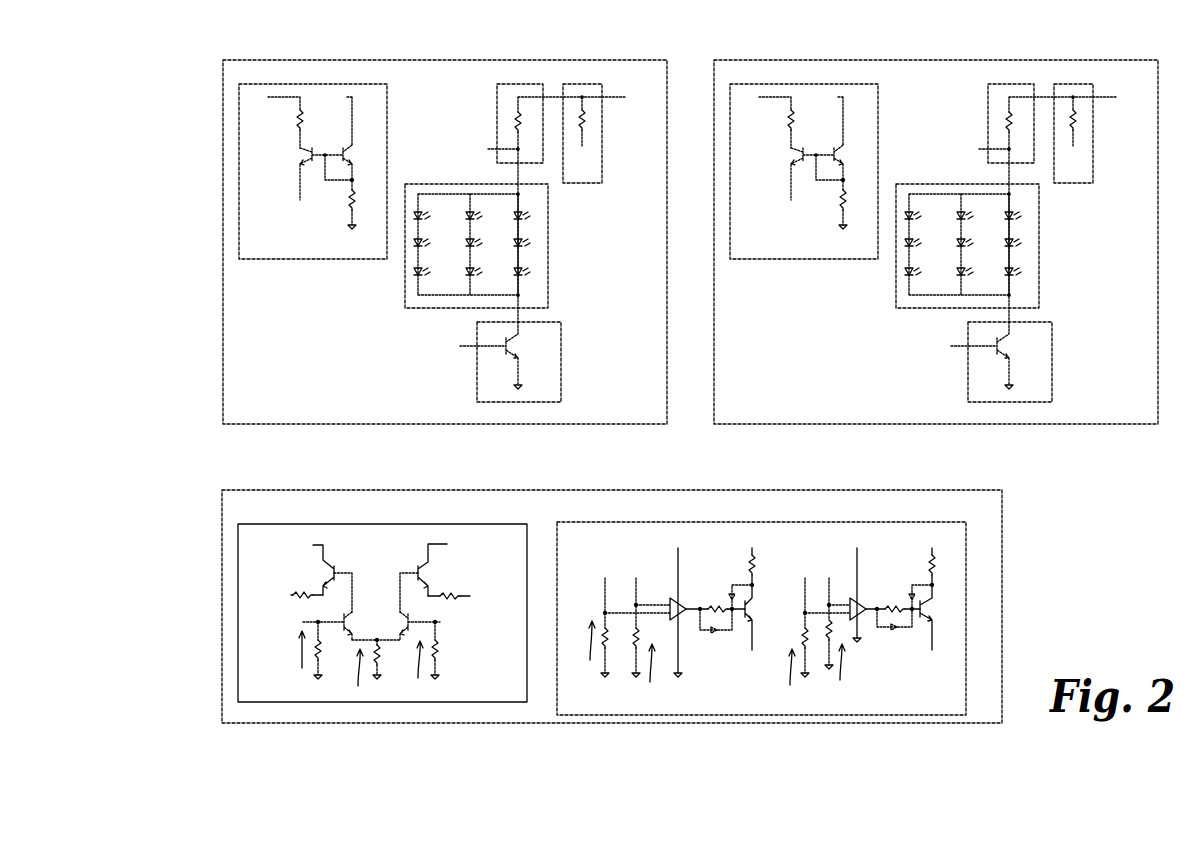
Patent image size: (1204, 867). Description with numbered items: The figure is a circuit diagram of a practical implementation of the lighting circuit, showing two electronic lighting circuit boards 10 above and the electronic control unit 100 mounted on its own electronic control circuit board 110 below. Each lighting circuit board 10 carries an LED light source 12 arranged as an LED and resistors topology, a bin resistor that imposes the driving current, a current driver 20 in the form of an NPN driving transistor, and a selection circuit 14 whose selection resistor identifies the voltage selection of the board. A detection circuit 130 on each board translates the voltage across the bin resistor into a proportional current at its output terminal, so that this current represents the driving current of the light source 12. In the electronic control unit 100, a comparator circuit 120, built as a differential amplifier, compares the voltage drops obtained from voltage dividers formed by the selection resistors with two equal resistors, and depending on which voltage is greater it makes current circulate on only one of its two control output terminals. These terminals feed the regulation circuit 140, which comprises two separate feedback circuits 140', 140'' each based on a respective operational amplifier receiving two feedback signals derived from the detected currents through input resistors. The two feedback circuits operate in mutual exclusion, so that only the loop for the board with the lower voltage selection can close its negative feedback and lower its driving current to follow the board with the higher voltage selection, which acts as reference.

The electronic lighting circuit board 10 is at (608, 424).
The light source 12 is at (548, 274).
The selection circuit 14 is at (603, 130).
The current driver 20 is at (562, 374).
The electronic control unit 100 is at (1019, 605).
The electronic control circuit board 110 is at (1003, 516).
The comparator circuit 120 is at (408, 524).
The detection circuit 130 is at (297, 259).
The regulation circuit 140 is at (761, 580).
The feedback circuit 140' is at (672, 641).
The feedback circuit 140'' is at (862, 641).